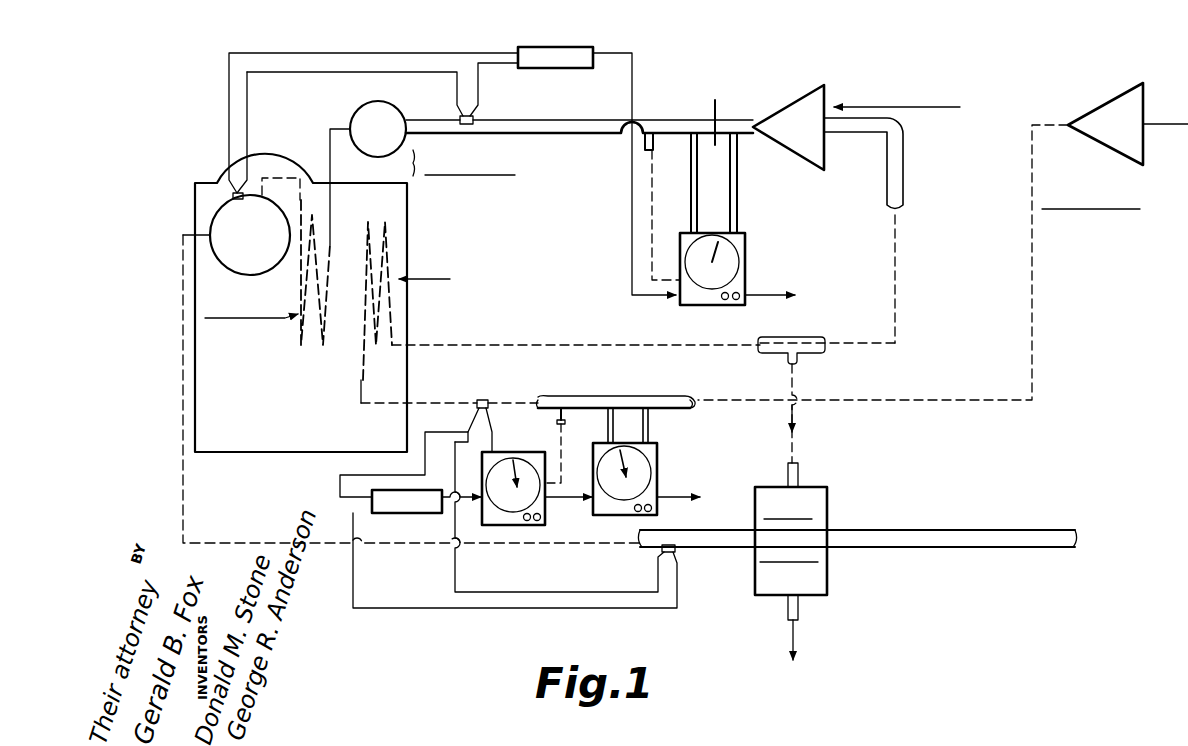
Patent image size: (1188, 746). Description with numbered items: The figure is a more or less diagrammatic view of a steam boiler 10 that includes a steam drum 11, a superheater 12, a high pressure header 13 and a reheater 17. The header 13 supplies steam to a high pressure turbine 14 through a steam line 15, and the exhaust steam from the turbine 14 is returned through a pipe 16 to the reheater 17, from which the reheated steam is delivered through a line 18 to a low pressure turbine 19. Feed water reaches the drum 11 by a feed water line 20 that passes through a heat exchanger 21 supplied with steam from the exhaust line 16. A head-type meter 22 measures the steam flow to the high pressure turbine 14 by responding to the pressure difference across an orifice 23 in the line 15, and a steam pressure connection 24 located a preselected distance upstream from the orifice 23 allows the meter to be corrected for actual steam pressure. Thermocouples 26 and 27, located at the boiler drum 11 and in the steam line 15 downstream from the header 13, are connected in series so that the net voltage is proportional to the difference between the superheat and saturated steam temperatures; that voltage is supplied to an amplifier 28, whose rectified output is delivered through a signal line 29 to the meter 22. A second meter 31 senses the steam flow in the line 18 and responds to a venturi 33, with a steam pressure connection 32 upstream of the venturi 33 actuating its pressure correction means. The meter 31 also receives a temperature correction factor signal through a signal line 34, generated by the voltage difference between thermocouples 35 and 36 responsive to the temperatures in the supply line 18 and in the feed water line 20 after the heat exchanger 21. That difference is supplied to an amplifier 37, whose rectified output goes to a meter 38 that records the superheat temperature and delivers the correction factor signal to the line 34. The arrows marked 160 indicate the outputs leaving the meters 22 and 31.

The steam boiler 10 is at (155, 226).
The steam drum 11 is at (263, 248).
The superheater 12 is at (333, 240).
The high pressure header 13 is at (353, 110).
The high pressure turbine 14 is at (792, 102).
The steam line 15 is at (586, 120).
The pipe 16 is at (889, 188).
The controller output 160 is at (783, 290).
The reheater 17 is at (395, 240).
The line 18 is at (1032, 252).
The low pressure turbine 19 is at (1105, 106).
The feed water line 20 is at (183, 490).
The heat exchanger 21 is at (830, 575).
The head-type meter 22 is at (780, 260).
The orifice 23 is at (714, 108).
The steam pressure connection 24 is at (655, 190).
The thermocouple 26 is at (232, 192).
The thermocouple 27 is at (476, 115).
The amplifier 28 is at (575, 47).
The signal line 29 is at (632, 243).
The meter 31 is at (690, 484).
The steam pressure connection 32 is at (560, 422).
The venturi 33 is at (626, 397).
The signal line 34 is at (560, 505).
The thermocouple 35 is at (478, 402).
The thermocouple 36 is at (662, 550).
The amplifier 37 is at (418, 513).
The meter 38 is at (497, 452).